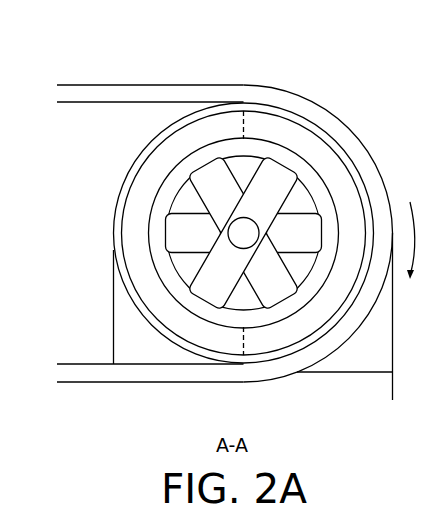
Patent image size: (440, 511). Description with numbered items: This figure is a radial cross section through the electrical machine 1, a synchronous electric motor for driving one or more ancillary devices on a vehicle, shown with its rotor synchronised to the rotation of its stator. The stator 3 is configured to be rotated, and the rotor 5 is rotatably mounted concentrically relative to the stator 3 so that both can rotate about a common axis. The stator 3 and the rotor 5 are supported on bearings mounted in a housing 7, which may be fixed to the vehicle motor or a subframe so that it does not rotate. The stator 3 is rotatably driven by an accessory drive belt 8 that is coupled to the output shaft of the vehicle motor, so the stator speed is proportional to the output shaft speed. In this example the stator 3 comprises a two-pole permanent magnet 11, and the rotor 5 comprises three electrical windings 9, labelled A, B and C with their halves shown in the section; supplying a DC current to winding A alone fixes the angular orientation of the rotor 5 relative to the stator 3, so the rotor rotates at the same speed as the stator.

The electrical machine 1 is at (353, 74).
The stator 3 is at (129, 151).
The rotor 5 is at (238, 235).
The housing 7 is at (125, 344).
The accessory drive belt 8 is at (82, 93).
The electrical windings 9 is at (300, 202).
The permanent magnet 11 is at (138, 207).